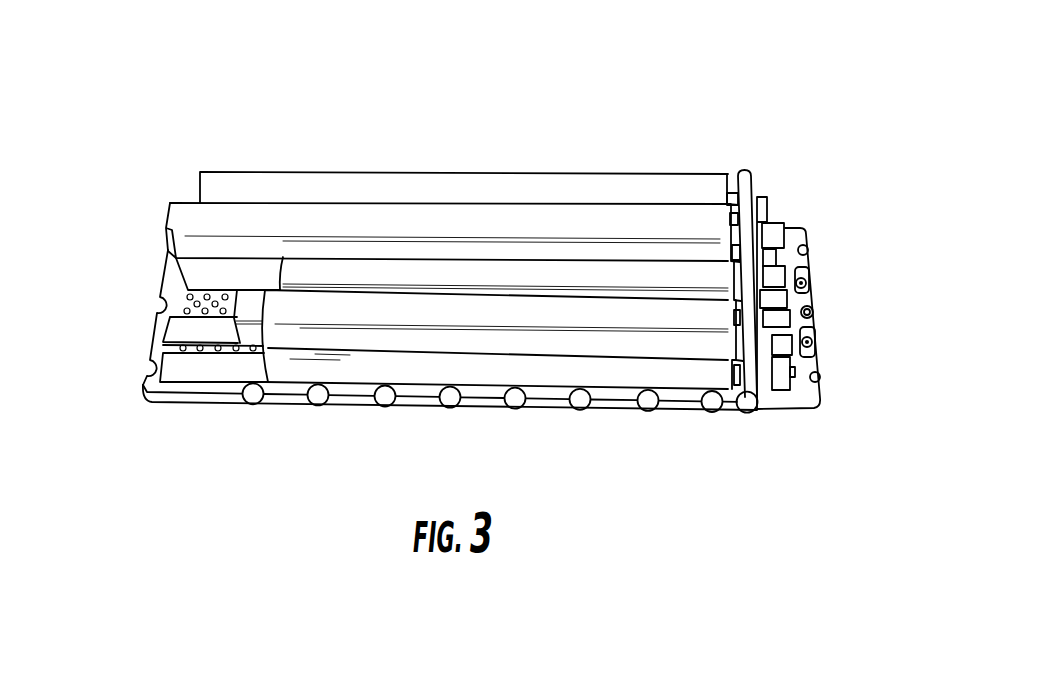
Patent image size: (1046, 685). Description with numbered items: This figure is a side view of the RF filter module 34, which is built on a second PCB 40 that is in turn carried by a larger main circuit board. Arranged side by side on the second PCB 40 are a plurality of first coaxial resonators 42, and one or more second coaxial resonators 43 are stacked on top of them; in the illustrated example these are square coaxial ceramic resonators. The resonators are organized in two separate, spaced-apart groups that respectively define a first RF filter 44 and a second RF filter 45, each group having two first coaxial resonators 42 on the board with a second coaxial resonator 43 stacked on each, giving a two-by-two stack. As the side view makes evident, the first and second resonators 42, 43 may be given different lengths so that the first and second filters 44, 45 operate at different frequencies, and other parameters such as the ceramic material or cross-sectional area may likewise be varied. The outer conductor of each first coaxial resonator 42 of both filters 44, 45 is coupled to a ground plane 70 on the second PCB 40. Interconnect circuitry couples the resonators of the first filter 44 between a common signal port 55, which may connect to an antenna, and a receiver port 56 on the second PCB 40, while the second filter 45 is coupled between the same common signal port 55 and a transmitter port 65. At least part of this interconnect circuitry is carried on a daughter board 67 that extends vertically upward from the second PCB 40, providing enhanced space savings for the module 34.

The RF filter module 34 is at (758, 78).
The second PCB 40 is at (812, 406).
The first coaxial resonators 42 is at (708, 403).
The second coaxial resonators 43 is at (478, 190).
The first RF filter 44 is at (262, 400).
The second RF filter 45 is at (190, 188).
The common signal port 55 is at (813, 312).
The receiver port 56 is at (820, 378).
The transmitter port 65 is at (808, 248).
The daughter board 67 is at (744, 185).
The ground plane 70 is at (168, 363).